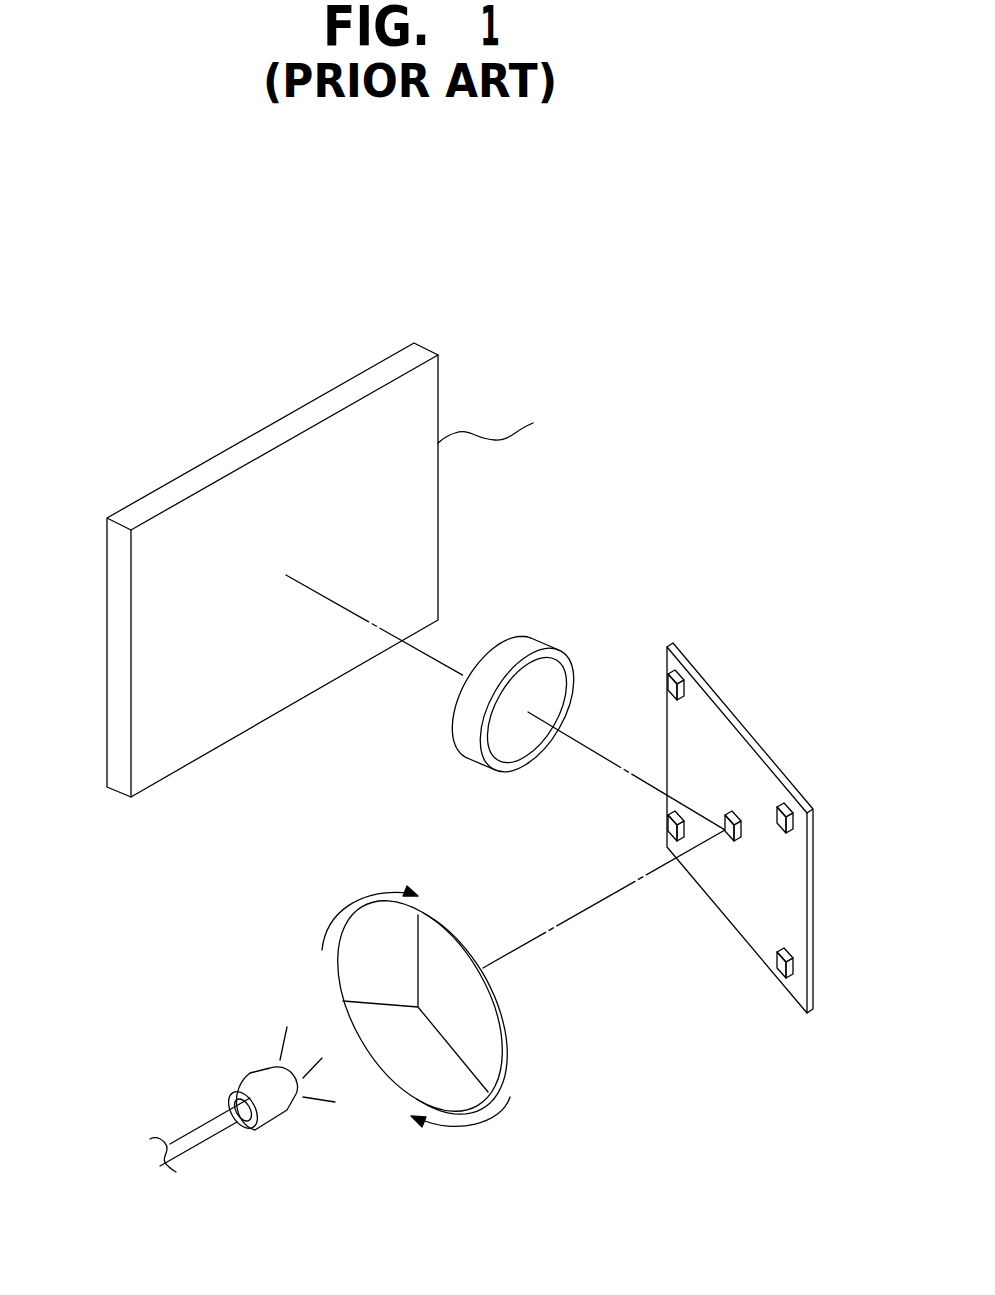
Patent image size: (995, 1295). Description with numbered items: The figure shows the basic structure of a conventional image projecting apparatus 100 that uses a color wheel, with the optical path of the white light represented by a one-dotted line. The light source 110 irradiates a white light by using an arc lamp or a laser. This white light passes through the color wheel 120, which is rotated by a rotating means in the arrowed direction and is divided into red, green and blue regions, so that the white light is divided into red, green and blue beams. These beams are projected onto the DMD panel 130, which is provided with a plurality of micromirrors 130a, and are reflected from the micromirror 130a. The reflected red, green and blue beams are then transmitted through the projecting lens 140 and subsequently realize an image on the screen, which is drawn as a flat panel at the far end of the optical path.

The projection display system 100 is at (213, 248).
The light source 110 is at (257, 1090).
The color wheel 120 is at (503, 1020).
The DMD panel 130 is at (773, 763).
The micromirror 130a is at (730, 815).
The projecting lens 140 is at (525, 643).